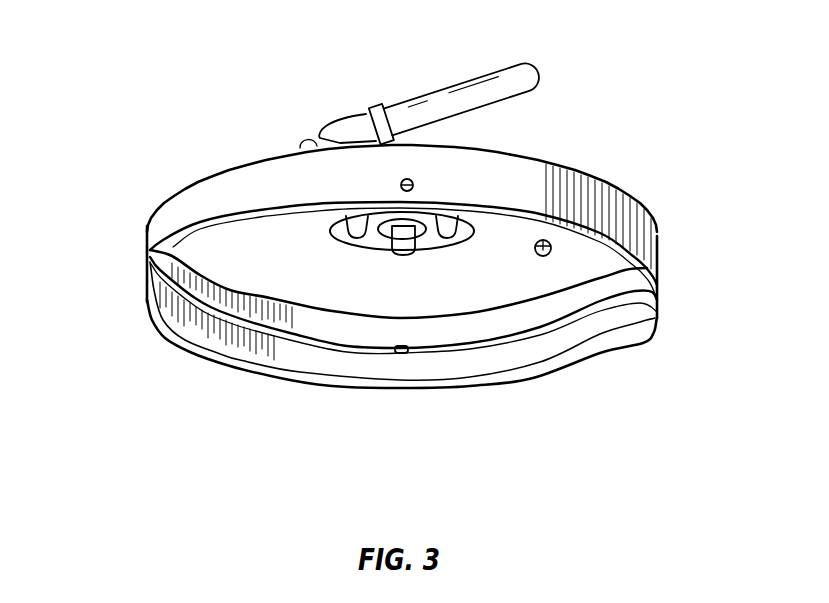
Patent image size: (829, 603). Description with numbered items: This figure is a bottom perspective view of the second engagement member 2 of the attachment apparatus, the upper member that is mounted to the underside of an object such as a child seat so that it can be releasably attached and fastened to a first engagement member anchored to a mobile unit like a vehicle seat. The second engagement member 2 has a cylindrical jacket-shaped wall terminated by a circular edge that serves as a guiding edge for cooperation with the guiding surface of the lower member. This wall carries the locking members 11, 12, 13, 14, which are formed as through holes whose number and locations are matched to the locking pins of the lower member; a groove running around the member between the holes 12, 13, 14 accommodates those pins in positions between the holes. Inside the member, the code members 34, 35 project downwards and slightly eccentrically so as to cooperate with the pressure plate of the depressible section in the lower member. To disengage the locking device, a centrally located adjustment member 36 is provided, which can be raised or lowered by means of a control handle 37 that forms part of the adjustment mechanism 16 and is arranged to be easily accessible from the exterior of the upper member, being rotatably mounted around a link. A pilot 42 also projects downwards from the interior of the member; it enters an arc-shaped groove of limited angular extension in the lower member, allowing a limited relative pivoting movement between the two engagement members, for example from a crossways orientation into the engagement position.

The second engagement member 2 is at (212, 168).
The locking member 11 is at (398, 185).
The locking member 12 is at (658, 263).
The locking member 13 is at (399, 357).
The locking member 14 is at (147, 263).
The adjustment mechanism 16 is at (420, 93).
The code member 34 is at (340, 233).
The code member 35 is at (456, 224).
The adjustment member 36 is at (401, 252).
The control handle 37 is at (520, 70).
The pilot 42 is at (537, 252).